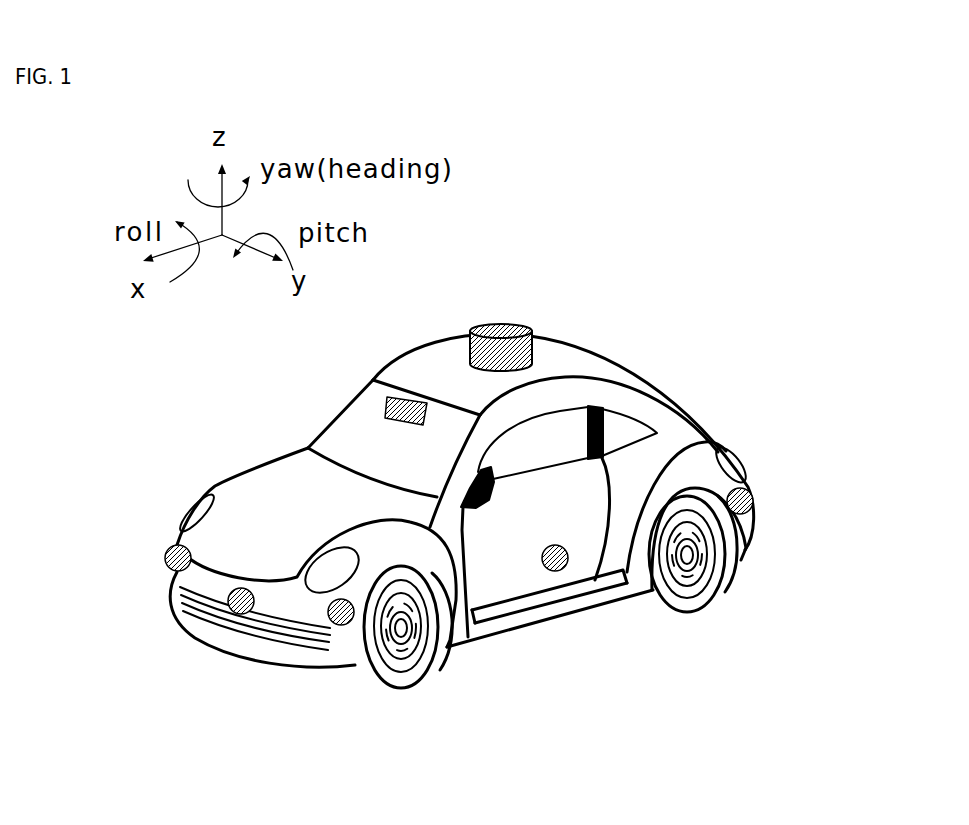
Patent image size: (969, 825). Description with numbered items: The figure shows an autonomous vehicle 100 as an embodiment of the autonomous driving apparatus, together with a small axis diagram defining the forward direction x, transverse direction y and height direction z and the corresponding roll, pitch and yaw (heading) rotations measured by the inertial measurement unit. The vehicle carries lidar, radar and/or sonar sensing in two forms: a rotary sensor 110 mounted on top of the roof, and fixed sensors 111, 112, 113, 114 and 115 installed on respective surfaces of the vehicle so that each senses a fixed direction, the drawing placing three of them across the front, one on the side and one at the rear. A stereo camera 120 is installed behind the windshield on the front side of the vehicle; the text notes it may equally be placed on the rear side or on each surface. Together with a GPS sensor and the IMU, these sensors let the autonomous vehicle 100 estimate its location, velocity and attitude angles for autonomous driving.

The autonomous vehicle 100 is at (612, 360).
The rotary sensor 110 is at (513, 322).
The fixed sensor 111 is at (164, 557).
The fixed sensor 112 is at (210, 637).
The fixed sensor 113 is at (318, 667).
The fixed sensor 114 is at (563, 572).
The fixed sensor 115 is at (755, 507).
The stereo camera 120 is at (382, 410).